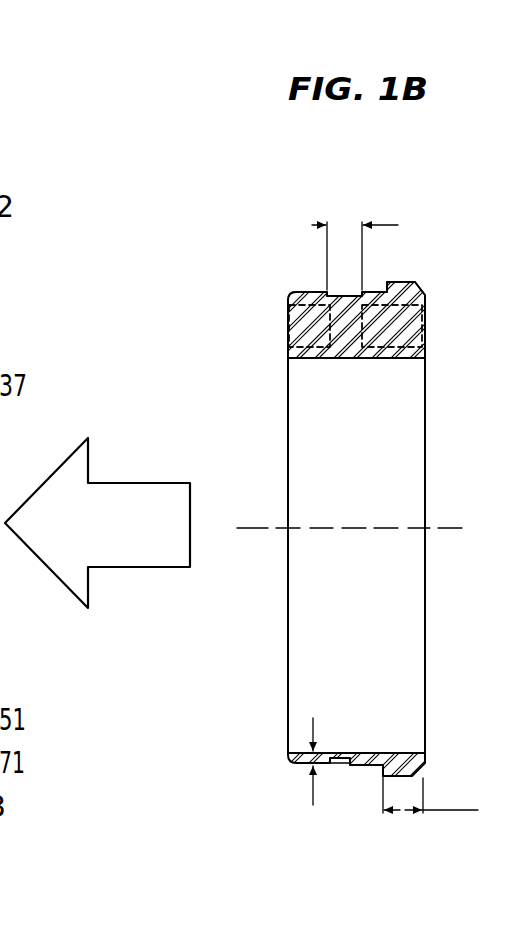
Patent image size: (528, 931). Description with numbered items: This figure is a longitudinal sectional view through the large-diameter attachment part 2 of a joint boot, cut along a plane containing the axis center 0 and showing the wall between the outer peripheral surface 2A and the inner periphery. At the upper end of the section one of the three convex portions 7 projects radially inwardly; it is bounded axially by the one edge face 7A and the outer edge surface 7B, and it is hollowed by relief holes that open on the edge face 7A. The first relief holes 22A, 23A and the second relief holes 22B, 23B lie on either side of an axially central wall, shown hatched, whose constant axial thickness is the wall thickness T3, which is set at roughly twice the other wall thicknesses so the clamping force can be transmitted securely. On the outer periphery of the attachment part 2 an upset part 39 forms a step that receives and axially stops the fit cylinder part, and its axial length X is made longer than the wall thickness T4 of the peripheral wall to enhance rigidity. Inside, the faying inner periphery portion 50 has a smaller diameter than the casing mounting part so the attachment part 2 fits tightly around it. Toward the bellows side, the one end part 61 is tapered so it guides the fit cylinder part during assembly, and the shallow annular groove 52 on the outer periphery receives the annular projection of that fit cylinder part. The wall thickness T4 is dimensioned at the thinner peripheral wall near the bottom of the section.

The large-diameter attachment part 2 is at (252, 240).
The outer peripheral surface 2A is at (295, 781).
The convex portion 7 is at (302, 377).
The one edge face of the large-diameter attachment part 7A is at (426, 296).
The outer edge surface of the large-diameter attachment part 7B is at (289, 298).
The first relief hole 22A is at (428, 316).
The second relief hole 22B is at (289, 319).
The first relief hole 23A is at (437, 332).
The second relief hole 23B is at (241, 335).
The upset part 39 is at (403, 282).
The faying inner periphery portion 50 is at (385, 375).
The annular groove 52 is at (348, 769).
The one end part of the large-diameter attachment part on the bellows part side 61 is at (297, 293).
The axis center 0 is at (363, 531).
The wall thickness of the third strut wall T3 is at (355, 236).
The wall thickness of the peripheral wall T4 is at (317, 781).
The axial length of the upset part X is at (430, 794).